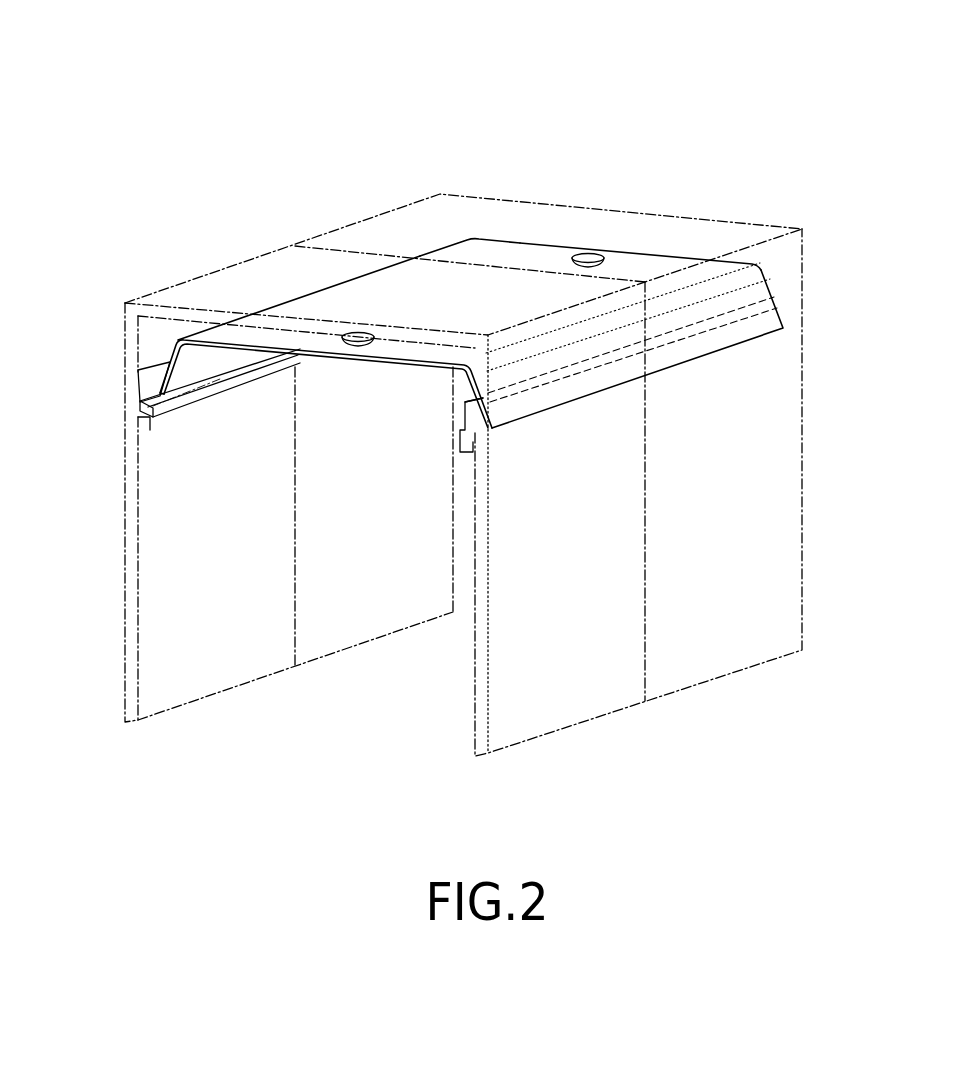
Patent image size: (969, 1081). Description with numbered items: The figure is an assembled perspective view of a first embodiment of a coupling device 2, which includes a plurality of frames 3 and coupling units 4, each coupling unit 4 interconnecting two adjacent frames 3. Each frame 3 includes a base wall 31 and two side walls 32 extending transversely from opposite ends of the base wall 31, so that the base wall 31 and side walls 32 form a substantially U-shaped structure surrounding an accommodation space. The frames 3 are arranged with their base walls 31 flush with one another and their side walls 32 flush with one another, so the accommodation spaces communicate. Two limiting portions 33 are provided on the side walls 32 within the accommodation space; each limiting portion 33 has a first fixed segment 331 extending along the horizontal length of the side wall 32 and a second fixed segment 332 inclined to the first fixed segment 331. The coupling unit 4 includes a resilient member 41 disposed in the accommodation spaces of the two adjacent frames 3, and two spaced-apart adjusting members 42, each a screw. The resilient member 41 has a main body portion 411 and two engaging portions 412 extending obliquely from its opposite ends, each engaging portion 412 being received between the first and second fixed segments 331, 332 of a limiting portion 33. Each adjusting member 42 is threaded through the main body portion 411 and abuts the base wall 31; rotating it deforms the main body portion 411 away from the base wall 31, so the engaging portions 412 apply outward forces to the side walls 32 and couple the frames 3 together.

The coupling device 2 is at (491, 124).
The frame 3 is at (569, 742).
The base wall 31 is at (220, 282).
The side wall 32 is at (202, 645).
The limiting portion 33 is at (182, 413).
The first fixed segment 331 is at (152, 428).
The second fixed segment 332 is at (135, 376).
The coupling unit 4 is at (313, 289).
The resilient member 41 is at (364, 292).
The main body portion 411 is at (458, 248).
The engaging portion 412 is at (176, 341).
The adjusting member 42 is at (592, 252).